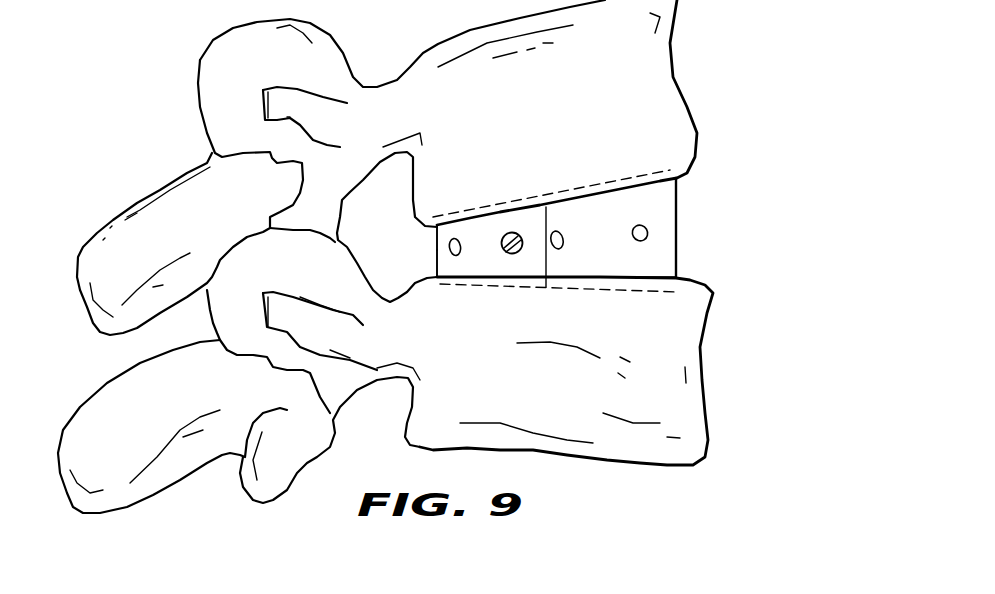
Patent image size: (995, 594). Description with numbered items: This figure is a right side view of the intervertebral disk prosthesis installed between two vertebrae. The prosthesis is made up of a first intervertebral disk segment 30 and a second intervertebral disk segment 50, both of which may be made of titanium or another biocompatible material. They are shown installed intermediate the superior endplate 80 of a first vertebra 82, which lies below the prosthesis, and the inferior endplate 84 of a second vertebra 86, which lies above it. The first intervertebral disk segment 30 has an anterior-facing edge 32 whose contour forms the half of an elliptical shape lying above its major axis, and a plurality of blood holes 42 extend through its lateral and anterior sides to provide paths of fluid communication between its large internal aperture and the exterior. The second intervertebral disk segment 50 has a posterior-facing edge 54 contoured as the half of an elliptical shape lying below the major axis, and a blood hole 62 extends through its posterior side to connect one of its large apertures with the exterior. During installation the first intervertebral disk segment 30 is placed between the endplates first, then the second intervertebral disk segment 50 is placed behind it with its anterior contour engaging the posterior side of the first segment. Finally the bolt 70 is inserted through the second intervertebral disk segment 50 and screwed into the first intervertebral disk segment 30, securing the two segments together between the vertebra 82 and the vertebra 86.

The first intervertebral disk segment 30 is at (680, 230).
The anterior-facing edge 32 is at (679, 250).
The blood holes 42 is at (641, 242).
The second intervertebral disk segment 50 is at (437, 270).
The posterior-facing edge 54 is at (437, 248).
The blood hole 62 is at (454, 237).
The bolt 70 is at (512, 256).
The superior endplate 80 is at (693, 281).
The first vertebra 82 is at (703, 403).
The inferior endplate 84 is at (683, 177).
The second vertebra 86 is at (687, 107).